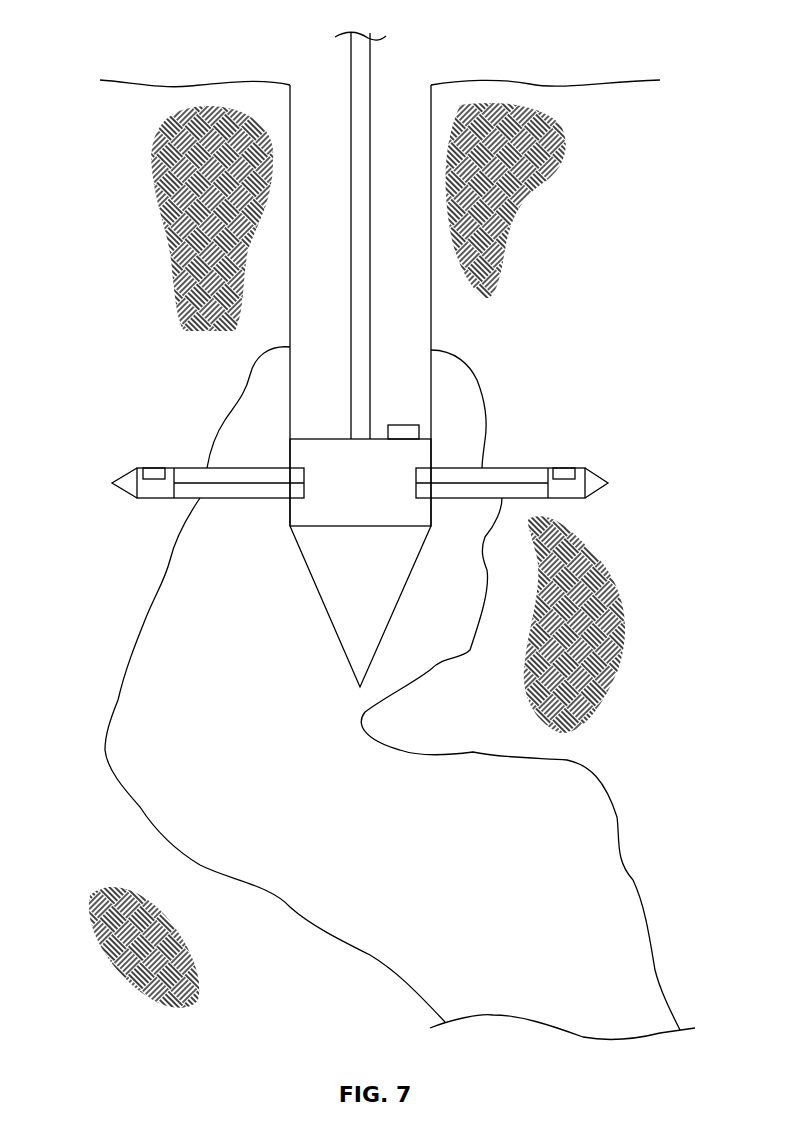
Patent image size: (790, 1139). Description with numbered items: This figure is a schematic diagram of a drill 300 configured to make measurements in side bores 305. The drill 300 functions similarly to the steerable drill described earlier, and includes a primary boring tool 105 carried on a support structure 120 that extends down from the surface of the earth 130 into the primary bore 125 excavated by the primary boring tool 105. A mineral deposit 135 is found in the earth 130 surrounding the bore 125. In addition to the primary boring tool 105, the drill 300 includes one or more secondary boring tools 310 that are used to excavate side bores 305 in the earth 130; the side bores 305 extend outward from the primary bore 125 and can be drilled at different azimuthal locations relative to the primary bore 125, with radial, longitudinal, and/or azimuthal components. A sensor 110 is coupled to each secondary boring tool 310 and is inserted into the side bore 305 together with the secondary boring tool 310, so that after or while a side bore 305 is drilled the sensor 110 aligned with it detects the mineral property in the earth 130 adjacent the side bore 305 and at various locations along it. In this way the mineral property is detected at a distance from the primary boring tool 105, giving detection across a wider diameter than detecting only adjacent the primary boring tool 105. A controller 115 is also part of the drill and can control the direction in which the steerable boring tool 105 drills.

The primary boring tool 105 is at (316, 597).
The sensor 110 is at (157, 468).
The controller 115 is at (393, 425).
The support structure 120 is at (360, 143).
The primary bore 125 is at (428, 103).
The earth 130 is at (512, 90).
The mineral deposit 135 is at (130, 710).
The drill 300 is at (312, 664).
The side bore 305 is at (268, 472).
The secondary boring tool 310 is at (120, 478).